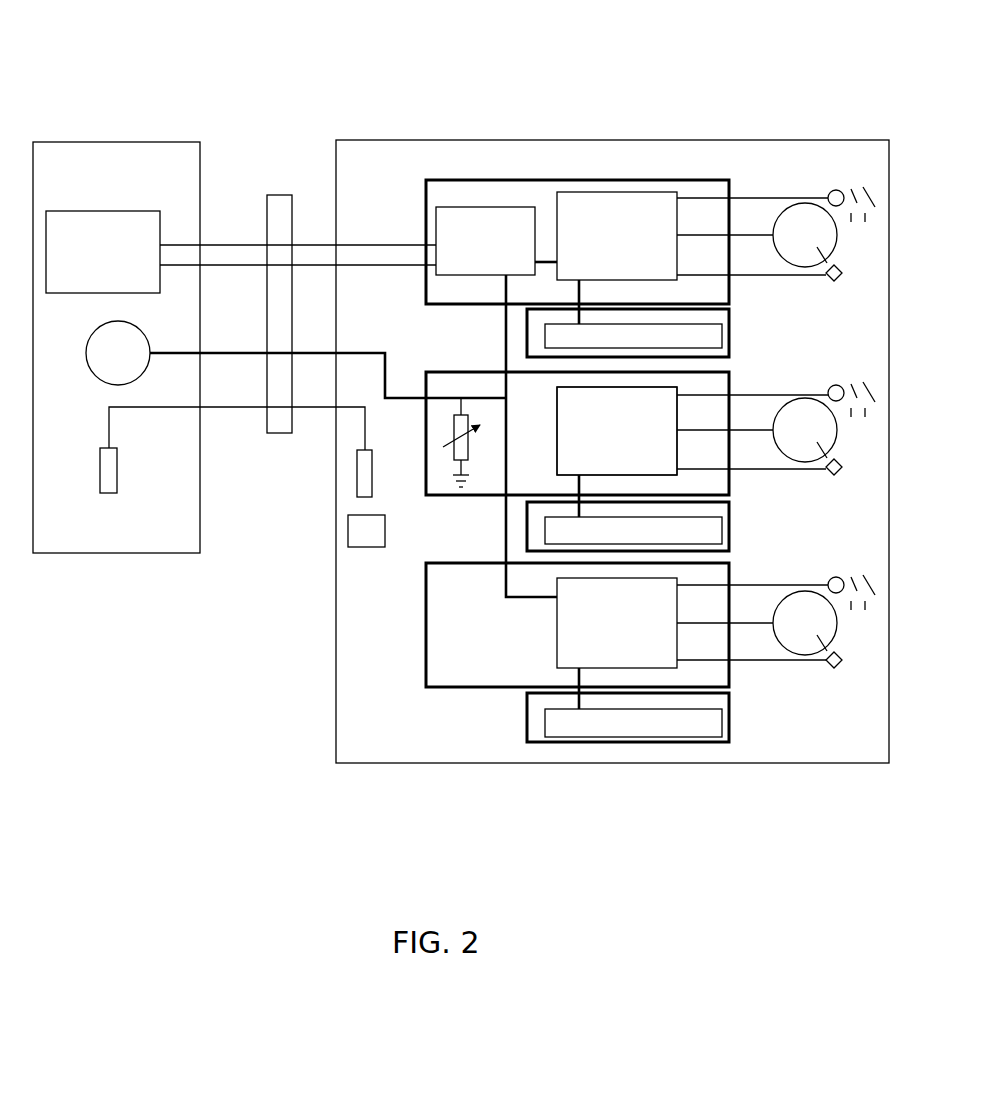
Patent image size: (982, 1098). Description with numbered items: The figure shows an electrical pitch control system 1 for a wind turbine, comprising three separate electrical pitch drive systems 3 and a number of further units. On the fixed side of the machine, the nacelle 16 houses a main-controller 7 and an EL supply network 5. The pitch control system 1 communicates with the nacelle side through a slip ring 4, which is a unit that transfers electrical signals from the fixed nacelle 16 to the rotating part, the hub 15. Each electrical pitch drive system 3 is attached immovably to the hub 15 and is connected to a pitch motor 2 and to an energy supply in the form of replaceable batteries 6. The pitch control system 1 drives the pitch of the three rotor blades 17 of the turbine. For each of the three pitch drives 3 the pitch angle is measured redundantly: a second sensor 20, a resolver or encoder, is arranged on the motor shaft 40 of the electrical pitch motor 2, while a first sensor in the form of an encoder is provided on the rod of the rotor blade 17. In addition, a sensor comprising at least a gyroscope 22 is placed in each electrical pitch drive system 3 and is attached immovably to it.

The pitch control system 1 is at (370, 152).
The pitch motor 2 is at (597, 615).
The electrical pitch drive system 3 is at (565, 303).
The slip ring 4 is at (280, 210).
The EL supply network 5 is at (106, 363).
The replaceable batteries 6 is at (560, 345).
The main-controller 7 is at (94, 243).
The hub 15 is at (310, 768).
The nacelle 16 is at (171, 70).
The rotor blade 17 is at (568, 462).
The second sensor 20 is at (835, 280).
The gyroscope 22 is at (353, 535).
The motor shaft 40 is at (799, 617).